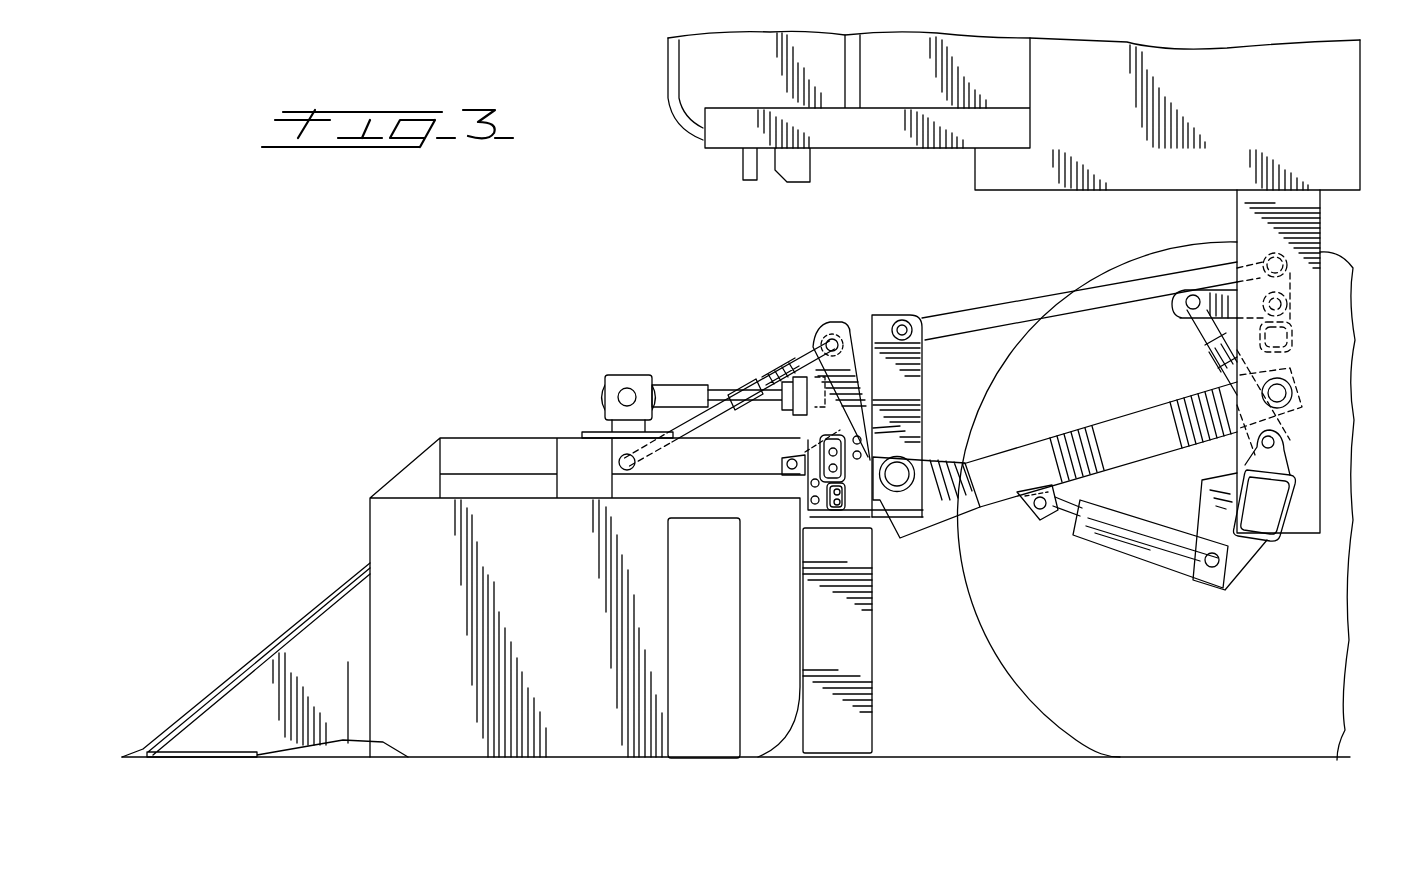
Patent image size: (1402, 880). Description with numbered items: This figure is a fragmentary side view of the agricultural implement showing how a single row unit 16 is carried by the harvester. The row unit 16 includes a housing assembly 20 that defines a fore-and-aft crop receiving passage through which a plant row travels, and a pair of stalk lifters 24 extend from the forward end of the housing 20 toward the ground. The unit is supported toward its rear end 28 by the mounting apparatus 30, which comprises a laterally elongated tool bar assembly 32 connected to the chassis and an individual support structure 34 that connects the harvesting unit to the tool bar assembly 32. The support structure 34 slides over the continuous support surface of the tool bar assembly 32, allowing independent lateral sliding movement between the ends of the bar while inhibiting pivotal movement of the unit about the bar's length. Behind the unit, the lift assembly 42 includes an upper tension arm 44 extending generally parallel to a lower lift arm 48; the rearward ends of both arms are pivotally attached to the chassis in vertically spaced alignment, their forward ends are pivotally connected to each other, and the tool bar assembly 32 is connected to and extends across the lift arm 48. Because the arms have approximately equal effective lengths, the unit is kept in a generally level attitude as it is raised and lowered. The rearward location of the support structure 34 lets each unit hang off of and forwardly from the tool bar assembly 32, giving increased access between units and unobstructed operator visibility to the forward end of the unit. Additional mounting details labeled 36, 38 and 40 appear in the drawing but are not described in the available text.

The row unit 16 is at (462, 434).
The housing assembly 20 is at (447, 762).
The stalk lifters 24 is at (250, 668).
The rear end 28 is at (806, 650).
The apparatus 30 is at (882, 540).
The tool bar assembly 32 is at (798, 500).
The support structure 34 is at (906, 308).
The connector 36 is at (822, 455).
The bracket face 38 is at (822, 455).
The pivot pin 40 is at (875, 448).
The lift assembly 42 is at (1155, 403).
The upper tension arm 44 is at (1003, 312).
The lift arm 48 is at (1040, 450).